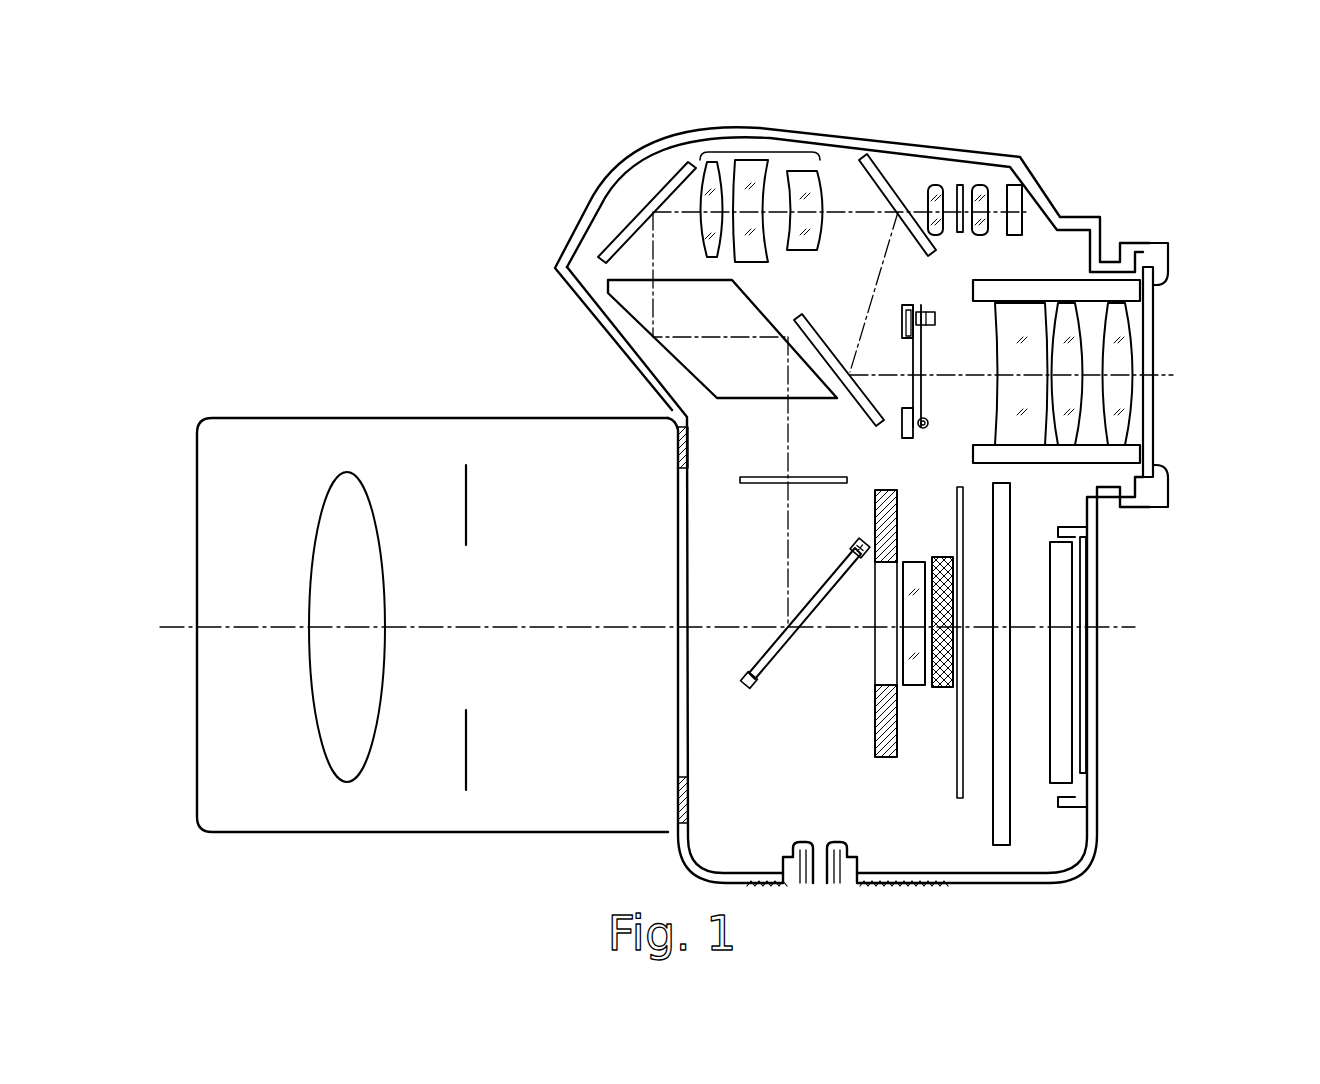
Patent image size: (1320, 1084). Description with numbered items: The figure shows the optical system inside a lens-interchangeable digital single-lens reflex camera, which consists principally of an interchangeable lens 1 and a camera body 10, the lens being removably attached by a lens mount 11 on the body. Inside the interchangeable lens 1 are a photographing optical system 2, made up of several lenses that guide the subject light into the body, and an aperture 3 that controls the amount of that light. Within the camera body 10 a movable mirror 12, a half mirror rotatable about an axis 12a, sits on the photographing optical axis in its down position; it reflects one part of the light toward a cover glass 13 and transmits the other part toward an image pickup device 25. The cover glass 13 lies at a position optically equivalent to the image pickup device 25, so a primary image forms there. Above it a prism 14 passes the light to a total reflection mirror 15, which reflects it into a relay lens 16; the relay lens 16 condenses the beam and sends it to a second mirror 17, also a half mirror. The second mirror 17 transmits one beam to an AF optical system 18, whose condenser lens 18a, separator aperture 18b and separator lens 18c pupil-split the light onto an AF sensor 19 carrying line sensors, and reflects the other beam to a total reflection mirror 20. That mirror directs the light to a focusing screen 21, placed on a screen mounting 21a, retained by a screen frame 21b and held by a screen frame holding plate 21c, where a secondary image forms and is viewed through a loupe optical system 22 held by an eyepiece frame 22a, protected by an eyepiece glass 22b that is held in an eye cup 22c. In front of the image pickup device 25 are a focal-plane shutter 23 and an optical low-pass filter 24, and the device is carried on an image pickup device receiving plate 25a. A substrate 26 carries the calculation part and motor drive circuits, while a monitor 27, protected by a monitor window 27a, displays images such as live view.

The interchangeable lens 1 is at (562, 832).
The photographing optical system 2 is at (347, 783).
The aperture 3 is at (470, 775).
The camera body 10 is at (1095, 818).
The lens mount 11 is at (677, 822).
The movable mirror 12 is at (767, 637).
The axis 12a is at (868, 546).
The cover glass 13 is at (760, 487).
The prism 14 is at (673, 358).
The total reflection mirror 15 is at (665, 187).
The relay lens 16 is at (757, 152).
The second mirror 17 is at (872, 162).
The AF optical system 18 is at (956, 144).
The condenser lens 18a is at (937, 183).
The separator aperture 18b is at (960, 183).
The separator lens 18c is at (1003, 165).
The AF sensor 19 is at (1015, 184).
The total reflection mirror 20 is at (830, 347).
The focusing screen 21 is at (923, 392).
The screen mounting 21a is at (918, 425).
The screen frame 21b is at (924, 328).
The screen frame holding plate 21c is at (932, 315).
The loupe optical system 22 is at (1017, 303).
The eyepiece frame 22a is at (1043, 454).
The eyepiece glass 22b is at (1154, 406).
The eye cup 22c is at (1170, 262).
The focal-plane shutter 23 is at (880, 757).
The optical low-pass filter 24 is at (908, 687).
The image pickup device 25 is at (940, 688).
The image pickup device receiving plate 25a is at (960, 800).
The substrate 26 is at (1003, 830).
The monitor 27 is at (1062, 726).
The monitor window 27a is at (1095, 680).